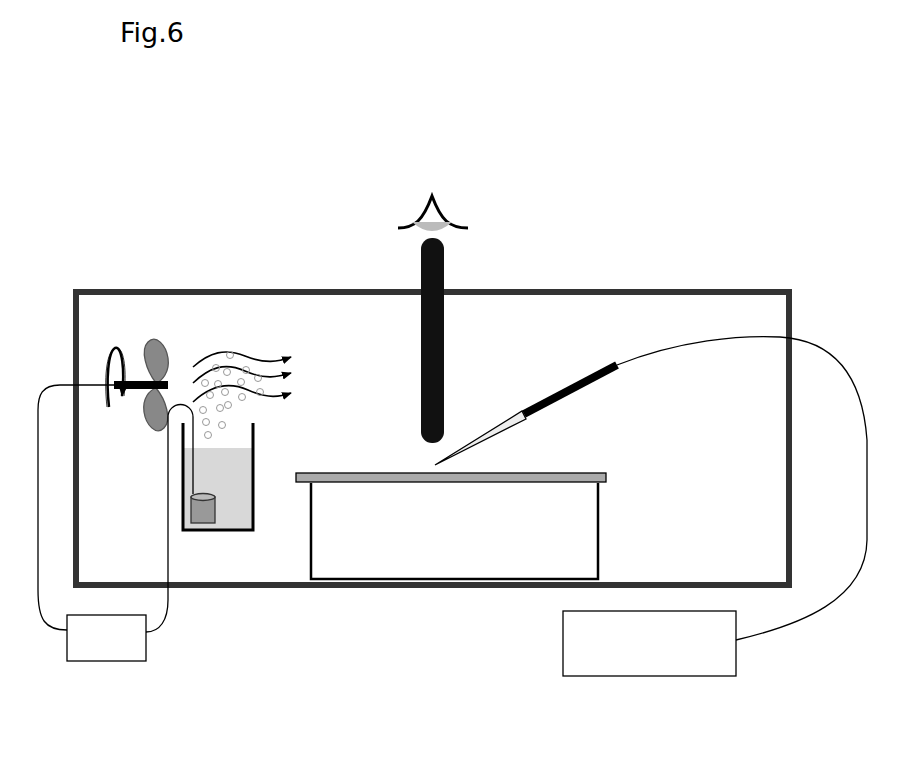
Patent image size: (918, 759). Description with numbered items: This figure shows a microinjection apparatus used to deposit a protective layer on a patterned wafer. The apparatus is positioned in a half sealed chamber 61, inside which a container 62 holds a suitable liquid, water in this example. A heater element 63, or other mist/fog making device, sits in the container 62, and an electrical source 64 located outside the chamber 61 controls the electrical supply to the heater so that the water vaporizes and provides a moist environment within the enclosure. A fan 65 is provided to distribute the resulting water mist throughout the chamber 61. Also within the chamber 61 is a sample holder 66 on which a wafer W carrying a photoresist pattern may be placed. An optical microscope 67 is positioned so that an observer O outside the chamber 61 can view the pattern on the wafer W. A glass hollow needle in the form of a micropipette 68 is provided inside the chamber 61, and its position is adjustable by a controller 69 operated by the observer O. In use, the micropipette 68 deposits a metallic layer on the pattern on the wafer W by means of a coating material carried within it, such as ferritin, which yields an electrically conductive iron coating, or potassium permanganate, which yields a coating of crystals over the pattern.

The half sealed chamber 61 is at (278, 591).
The container 62 is at (241, 533).
The heater element 63 is at (200, 516).
The electrical source 64 is at (97, 664).
The fan 65 is at (128, 348).
The sample holder 66 is at (352, 567).
The optical microscope 67 is at (409, 258).
The micropipette 68 is at (500, 415).
The controller 69 is at (583, 678).
The observer O is at (450, 187).
The wafer W is at (612, 483).